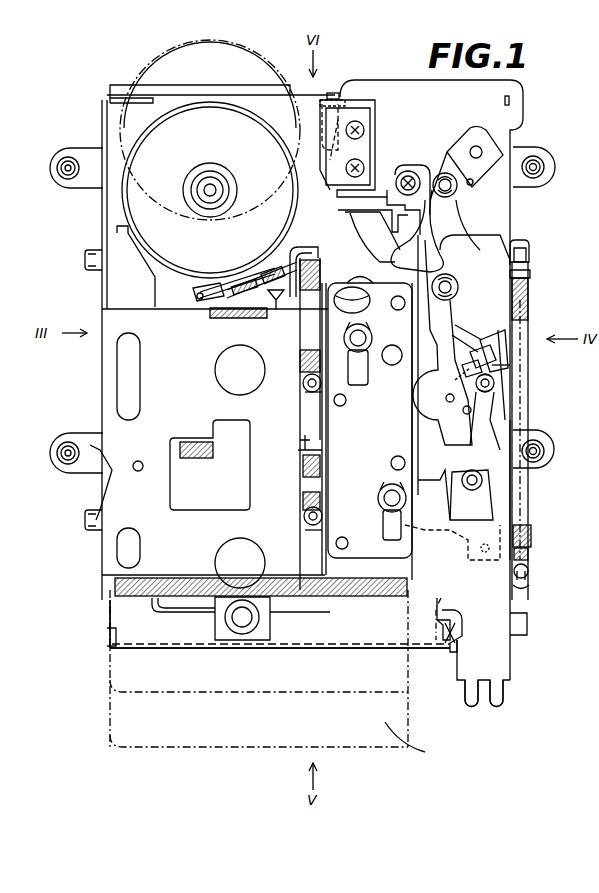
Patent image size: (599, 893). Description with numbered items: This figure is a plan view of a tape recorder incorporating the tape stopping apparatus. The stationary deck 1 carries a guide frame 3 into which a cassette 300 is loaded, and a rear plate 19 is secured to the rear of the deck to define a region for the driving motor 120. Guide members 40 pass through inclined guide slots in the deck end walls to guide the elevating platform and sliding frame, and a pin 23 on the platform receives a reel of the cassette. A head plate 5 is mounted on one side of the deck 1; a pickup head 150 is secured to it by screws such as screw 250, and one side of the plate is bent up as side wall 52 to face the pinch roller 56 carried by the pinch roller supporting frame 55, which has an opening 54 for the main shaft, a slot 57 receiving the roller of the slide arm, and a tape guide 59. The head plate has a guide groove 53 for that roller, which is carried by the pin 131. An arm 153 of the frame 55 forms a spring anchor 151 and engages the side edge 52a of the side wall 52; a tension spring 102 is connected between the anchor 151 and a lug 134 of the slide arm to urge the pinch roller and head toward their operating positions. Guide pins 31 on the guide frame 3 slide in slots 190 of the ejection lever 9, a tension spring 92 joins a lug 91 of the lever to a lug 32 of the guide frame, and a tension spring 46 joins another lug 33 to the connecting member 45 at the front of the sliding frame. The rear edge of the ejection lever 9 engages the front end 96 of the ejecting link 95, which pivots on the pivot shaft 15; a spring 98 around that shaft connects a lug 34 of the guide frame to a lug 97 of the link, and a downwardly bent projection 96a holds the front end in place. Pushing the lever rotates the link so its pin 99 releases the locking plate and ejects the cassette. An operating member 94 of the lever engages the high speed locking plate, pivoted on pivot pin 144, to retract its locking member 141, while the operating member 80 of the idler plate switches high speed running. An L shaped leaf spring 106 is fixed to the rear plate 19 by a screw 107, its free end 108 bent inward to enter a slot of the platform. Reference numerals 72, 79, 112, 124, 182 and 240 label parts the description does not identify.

The stationary deck 1 is at (206, 652).
The guide frame 3 is at (100, 389).
The head plate 5 is at (522, 487).
The ejection lever 9 is at (500, 651).
The pivot shaft 15 is at (452, 190).
The rear plate 19 is at (186, 96).
The pin 23 is at (258, 626).
The guide pins 31 is at (370, 334).
The lug 32 is at (305, 522).
The lug 33 is at (304, 388).
The lug 34 is at (390, 226).
The guide members 40 is at (100, 262).
The connecting member 45 is at (286, 255).
The tension spring 46 is at (314, 283).
The bent up side wall 52 is at (529, 325).
The side edge 52a is at (529, 283).
The guide groove 53 is at (506, 409).
The opening 54 is at (484, 345).
The pinch roller supporting frame 55 is at (452, 330).
The pinch roller 56 is at (433, 415).
The slot 57 is at (498, 397).
The tape guide 59 is at (496, 356).
The hatched plate 72 is at (214, 304).
The pin block 79 is at (194, 292).
The operating member 80 is at (503, 695).
The lug 91 is at (303, 442).
The tension spring 92 is at (322, 463).
The operating member 94 is at (452, 604).
The ejecting link 95 is at (472, 184).
The front end 96 is at (392, 258).
The downwardly bent projection 96a is at (372, 237).
The lug 97 is at (462, 172).
The spring 98 is at (410, 170).
The pin 99 is at (476, 146).
The tension spring 102 is at (529, 304).
The leaf spring 106 is at (341, 100).
The screw 107 is at (333, 93).
The free end 108 is at (345, 149).
The mounting bracket 112 is at (545, 160).
The driving motor 120 is at (133, 197).
The spring end 124 is at (278, 303).
The pin 131 is at (496, 383).
The lug 134 is at (522, 588).
The locking member 141 is at (448, 644).
The pivot pin 144 is at (442, 298).
The pickup head 150 is at (442, 496).
The spring anchor 151 is at (529, 258).
The arm 153 is at (480, 262).
The spring 182 is at (272, 270).
The slots 190 is at (368, 372).
The knob 240 is at (90, 256).
The screw 250 is at (473, 490).
The cassette 300 is at (425, 752).